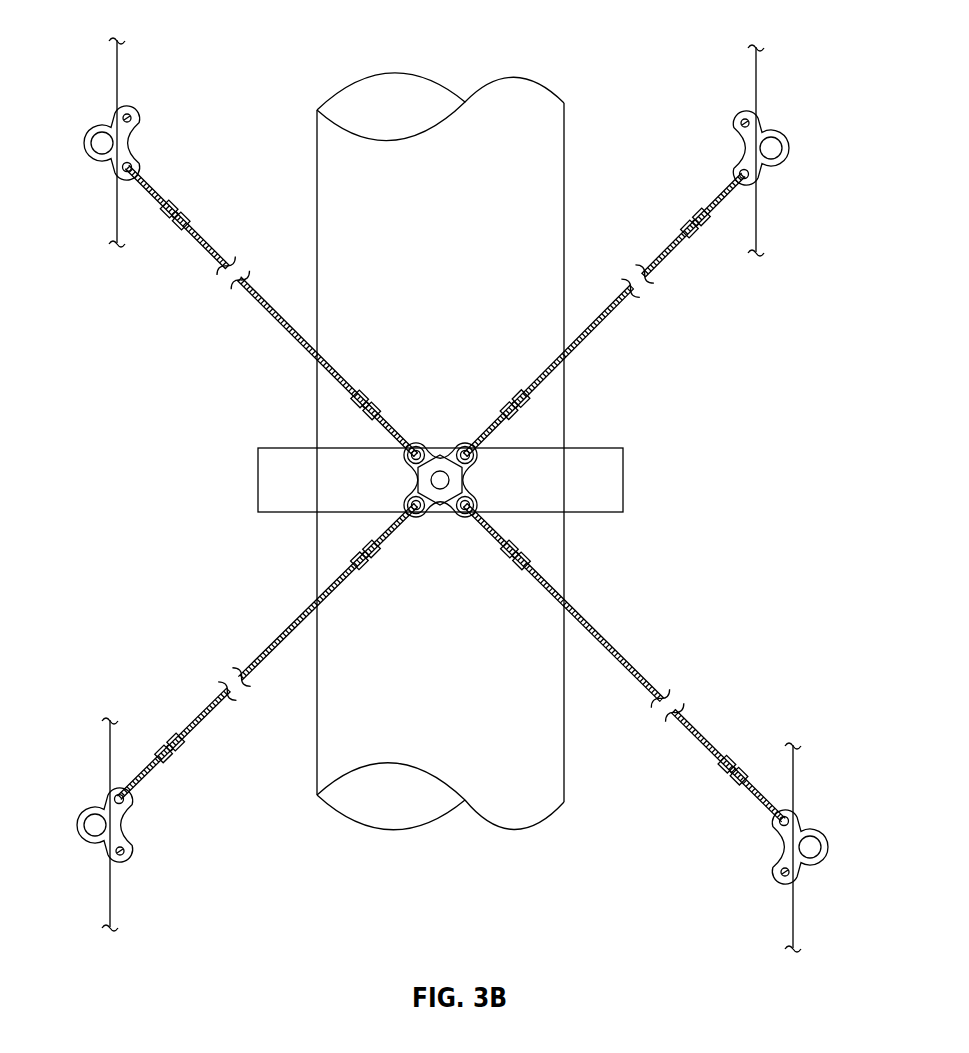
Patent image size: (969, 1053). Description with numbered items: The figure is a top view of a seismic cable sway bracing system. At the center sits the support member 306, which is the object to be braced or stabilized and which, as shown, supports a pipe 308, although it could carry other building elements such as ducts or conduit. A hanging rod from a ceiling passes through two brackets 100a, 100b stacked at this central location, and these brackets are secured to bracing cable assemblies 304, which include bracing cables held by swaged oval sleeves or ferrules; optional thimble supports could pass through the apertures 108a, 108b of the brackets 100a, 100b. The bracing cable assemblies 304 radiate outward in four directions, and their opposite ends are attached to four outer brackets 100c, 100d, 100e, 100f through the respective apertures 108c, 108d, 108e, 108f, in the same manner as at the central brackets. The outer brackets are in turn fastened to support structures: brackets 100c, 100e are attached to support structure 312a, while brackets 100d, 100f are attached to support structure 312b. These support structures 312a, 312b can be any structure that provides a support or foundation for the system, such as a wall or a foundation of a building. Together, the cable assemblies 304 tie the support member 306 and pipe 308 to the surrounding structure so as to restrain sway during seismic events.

The bracket 100a is at (388, 494).
The bracket 100b is at (490, 460).
The bracket 100c is at (152, 106).
The bracket 100d is at (726, 112).
The bracket 100e is at (125, 873).
The bracket 100f is at (773, 894).
The aperture 108a is at (417, 447).
The aperture 108b is at (467, 447).
The aperture 108c is at (131, 167).
The aperture 108d is at (740, 175).
The aperture 108e is at (124, 800).
The aperture 108f is at (779, 820).
The bracing cable assembly 304 is at (272, 318).
The support member 306 is at (595, 490).
The pipe 308 is at (527, 125).
The support structure 312a is at (97, 72).
The support structure 312b is at (852, 89).